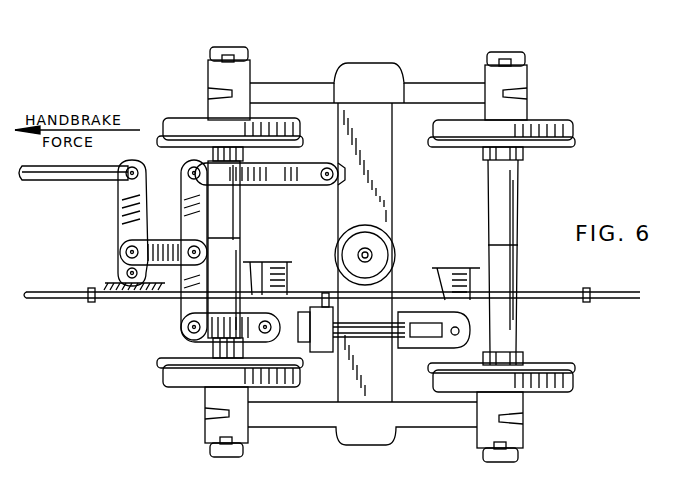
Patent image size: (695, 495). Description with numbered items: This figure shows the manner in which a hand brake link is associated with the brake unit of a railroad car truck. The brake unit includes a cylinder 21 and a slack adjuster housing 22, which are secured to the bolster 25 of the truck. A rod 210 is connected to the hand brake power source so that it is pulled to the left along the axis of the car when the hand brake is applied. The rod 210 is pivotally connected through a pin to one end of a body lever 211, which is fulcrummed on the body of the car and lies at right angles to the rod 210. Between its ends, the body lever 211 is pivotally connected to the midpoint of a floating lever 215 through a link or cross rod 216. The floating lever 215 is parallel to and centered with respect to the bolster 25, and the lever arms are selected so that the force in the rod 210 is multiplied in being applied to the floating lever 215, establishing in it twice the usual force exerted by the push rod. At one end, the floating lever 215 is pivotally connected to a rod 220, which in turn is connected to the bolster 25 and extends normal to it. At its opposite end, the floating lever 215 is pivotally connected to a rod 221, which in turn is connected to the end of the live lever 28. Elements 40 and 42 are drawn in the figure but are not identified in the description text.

The rod 210 is at (78, 174).
The body lever 211 is at (128, 207).
The floating lever 215 is at (190, 197).
The link or cross rod 216 is at (162, 247).
The rod 220 is at (293, 187).
The rod 221 is at (213, 337).
The bolster 25 is at (367, 180).
The live lever 28 is at (260, 280).
The cylinder 21 is at (318, 312).
The slack adjuster housing 22 is at (378, 300).
The bracket 40 is at (458, 280).
The lever link 42 is at (427, 340).